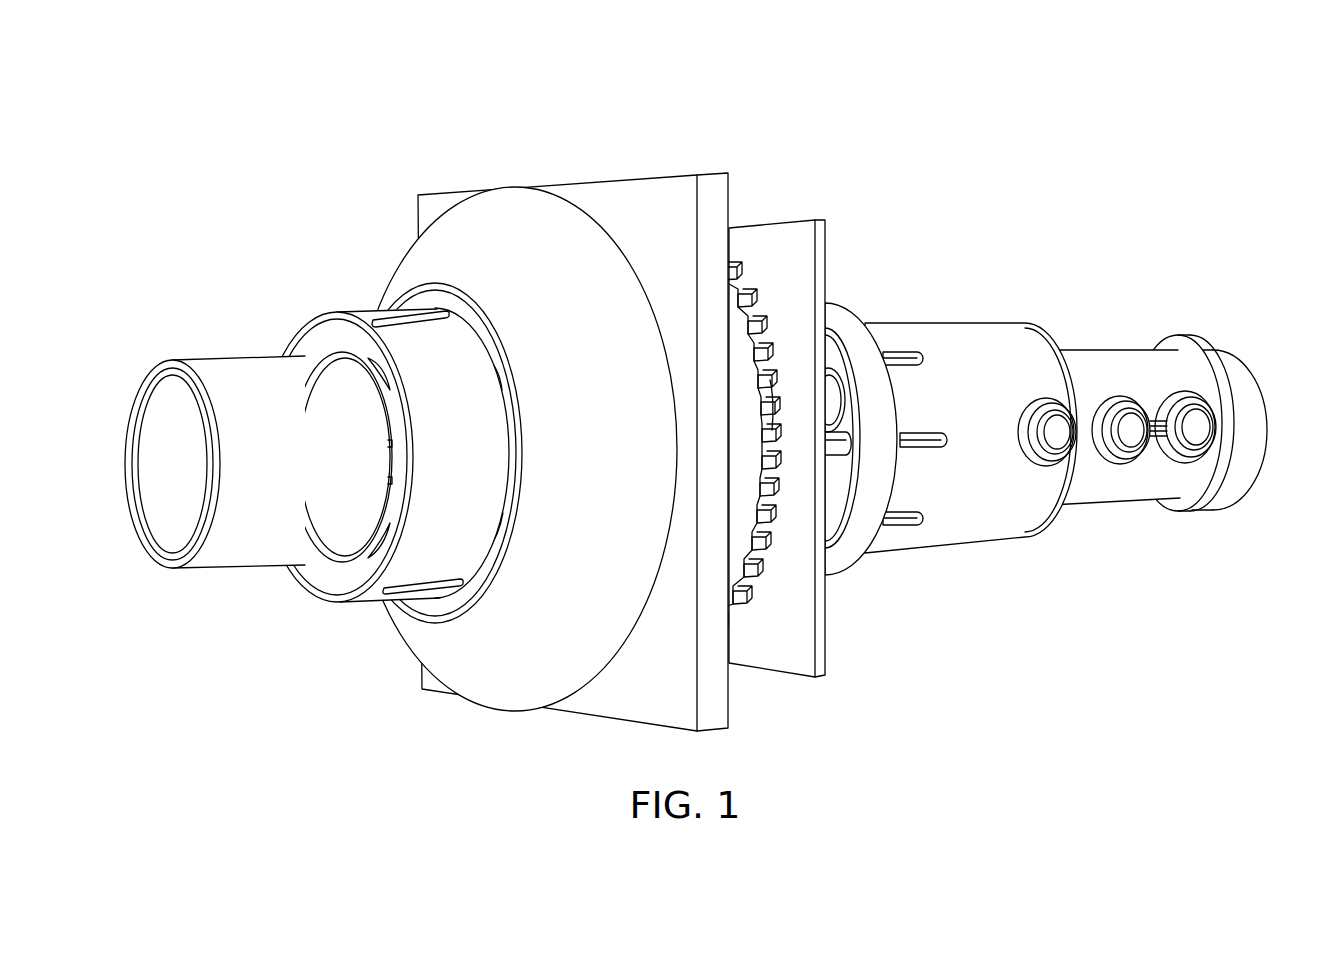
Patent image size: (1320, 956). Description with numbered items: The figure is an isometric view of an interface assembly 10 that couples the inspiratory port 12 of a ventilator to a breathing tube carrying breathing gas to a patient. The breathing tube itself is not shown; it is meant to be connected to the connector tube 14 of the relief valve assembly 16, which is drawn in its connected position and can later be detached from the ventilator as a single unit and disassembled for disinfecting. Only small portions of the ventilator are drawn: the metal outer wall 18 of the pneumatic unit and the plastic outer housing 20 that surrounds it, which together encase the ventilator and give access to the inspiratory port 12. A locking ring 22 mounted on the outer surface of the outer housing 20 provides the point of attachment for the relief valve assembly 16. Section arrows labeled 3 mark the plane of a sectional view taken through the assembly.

The interface assembly 10 is at (879, 194).
The inspiratory port 12 is at (958, 340).
The connector tube 14 is at (224, 377).
The relief valve assembly 16 is at (305, 296).
The outer wall 18 is at (762, 240).
The outer housing 20 is at (641, 193).
The locking ring 22 is at (484, 210).
The section line 3- 3 is at (166, 448).